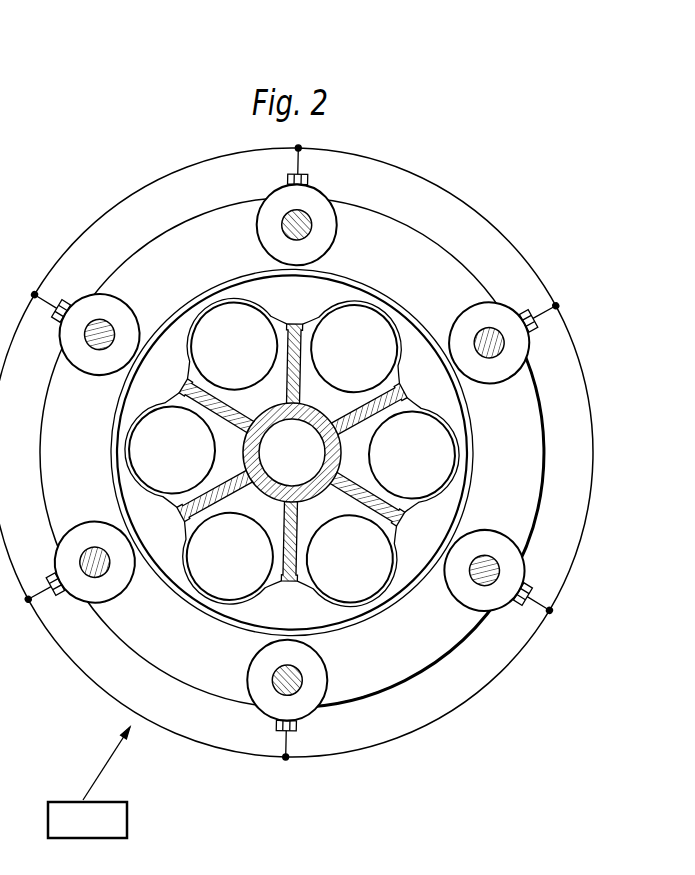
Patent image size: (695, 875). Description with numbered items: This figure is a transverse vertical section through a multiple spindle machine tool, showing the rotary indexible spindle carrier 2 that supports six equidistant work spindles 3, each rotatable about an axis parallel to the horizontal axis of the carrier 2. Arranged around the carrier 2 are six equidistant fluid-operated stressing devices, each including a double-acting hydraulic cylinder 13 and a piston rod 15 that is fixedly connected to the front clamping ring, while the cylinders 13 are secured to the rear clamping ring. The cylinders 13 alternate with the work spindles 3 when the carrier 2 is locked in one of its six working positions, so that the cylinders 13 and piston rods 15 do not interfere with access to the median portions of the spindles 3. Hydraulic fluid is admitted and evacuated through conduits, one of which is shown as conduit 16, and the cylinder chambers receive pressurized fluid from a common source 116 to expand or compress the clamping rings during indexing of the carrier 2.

The spindle carrier 2 is at (402, 235).
The work spindles 3 is at (370, 328).
The double-acting hydraulic cylinder 13 is at (313, 203).
The piston rod 15 is at (310, 228).
The conduit 16 is at (445, 717).
The common source 116 is at (127, 832).